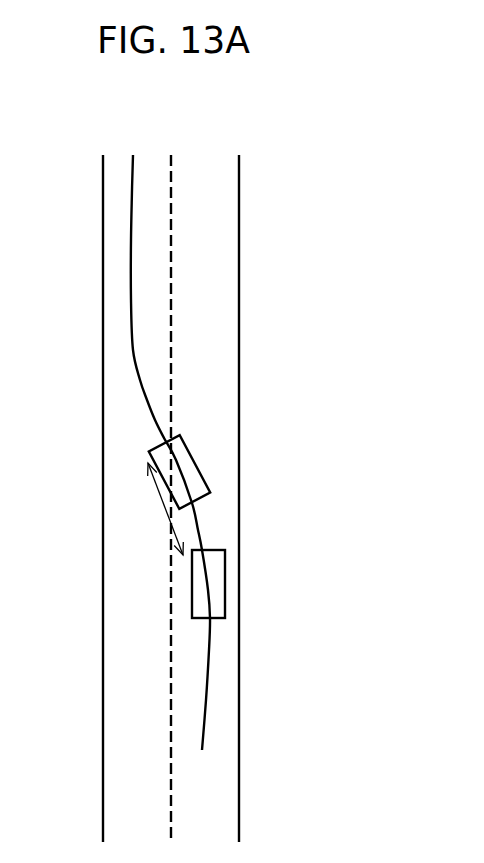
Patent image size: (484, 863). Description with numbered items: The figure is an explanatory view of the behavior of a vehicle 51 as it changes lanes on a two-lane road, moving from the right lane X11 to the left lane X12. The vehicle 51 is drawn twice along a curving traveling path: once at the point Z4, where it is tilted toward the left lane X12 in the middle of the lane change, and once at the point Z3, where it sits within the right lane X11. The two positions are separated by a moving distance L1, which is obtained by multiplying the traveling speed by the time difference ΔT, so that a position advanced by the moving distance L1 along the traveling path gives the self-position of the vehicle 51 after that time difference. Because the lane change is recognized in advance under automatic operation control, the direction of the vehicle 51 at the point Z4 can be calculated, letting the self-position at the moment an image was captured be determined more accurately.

The vehicle 51 is at (154, 481).
The moving distance L1 is at (162, 502).
The point Z4 is at (186, 443).
The point Z3 is at (225, 583).
The left lane X12 is at (118, 795).
The right lane X11 is at (218, 797).